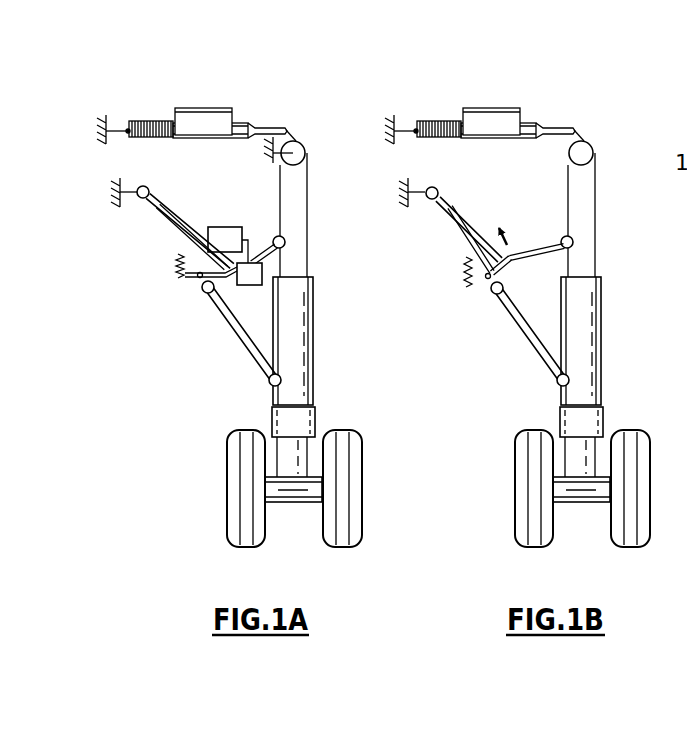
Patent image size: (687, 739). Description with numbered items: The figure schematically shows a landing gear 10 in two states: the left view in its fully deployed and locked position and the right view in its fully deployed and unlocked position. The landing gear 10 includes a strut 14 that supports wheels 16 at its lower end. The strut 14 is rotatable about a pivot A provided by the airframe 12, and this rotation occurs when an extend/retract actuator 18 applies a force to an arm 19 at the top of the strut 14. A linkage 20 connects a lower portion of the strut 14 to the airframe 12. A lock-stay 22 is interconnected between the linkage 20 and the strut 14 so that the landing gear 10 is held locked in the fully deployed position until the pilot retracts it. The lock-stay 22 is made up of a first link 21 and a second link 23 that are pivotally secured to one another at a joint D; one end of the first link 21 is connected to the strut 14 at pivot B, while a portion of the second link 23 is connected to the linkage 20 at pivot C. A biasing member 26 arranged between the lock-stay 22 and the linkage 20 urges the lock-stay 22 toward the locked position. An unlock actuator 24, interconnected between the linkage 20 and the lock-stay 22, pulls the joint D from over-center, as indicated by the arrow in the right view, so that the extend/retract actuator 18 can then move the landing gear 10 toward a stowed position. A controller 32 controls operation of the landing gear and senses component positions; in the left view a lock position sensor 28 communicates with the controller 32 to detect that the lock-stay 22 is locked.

In FIG. 1A, the landing gear 10 is at (171, 395).
In FIG. 1B, the landing gear 10 is at (456, 405).
In FIG. 1A, the airframe 12 is at (104, 130).
In FIG. 1B, the airframe 12 is at (383, 161).
In FIG. 1A, the strut 14 is at (301, 333).
In FIG. 1B, the strut 14 is at (592, 327).
In FIG. 1A, the wheels 16 is at (354, 535).
In FIG. 1B, the wheels 16 is at (599, 493).
In FIG. 1A, the extend/retract actuator 18 is at (232, 110).
In FIG. 1B, the extend/retract actuator 18 is at (500, 116).
In FIG. 1A, the arm 19 is at (296, 132).
In FIG. 1B, the arm 19 is at (592, 137).
In FIG. 1A, the linkage 20 is at (222, 322).
In FIG. 1B, the linkage 20 is at (513, 334).
In FIG. 1B, the first link 21 is at (536, 207).
In FIG. 1A, the lock-stay 22 is at (270, 258).
In FIG. 1B, the lock-stay 22 is at (531, 239).
In FIG. 1B, the second link 23 is at (521, 282).
In FIG. 1A, the unlock actuator 24 is at (180, 232).
In FIG. 1B, the unlock actuator 24 is at (464, 227).
In FIG. 1A, the biasing member 26 is at (176, 268).
In FIG. 1B, the biasing member 26 is at (447, 279).
In FIG. 1A, the lock position sensor 28 is at (243, 287).
In FIG. 1A, the controller 32 is at (228, 245).
In FIG. 1B, the pivot A is at (607, 169).
In FIG. 1B, the pivot B is at (600, 233).
In FIG. 1B, the pivot C is at (475, 306).
In FIG. 1B, the joint D is at (545, 271).